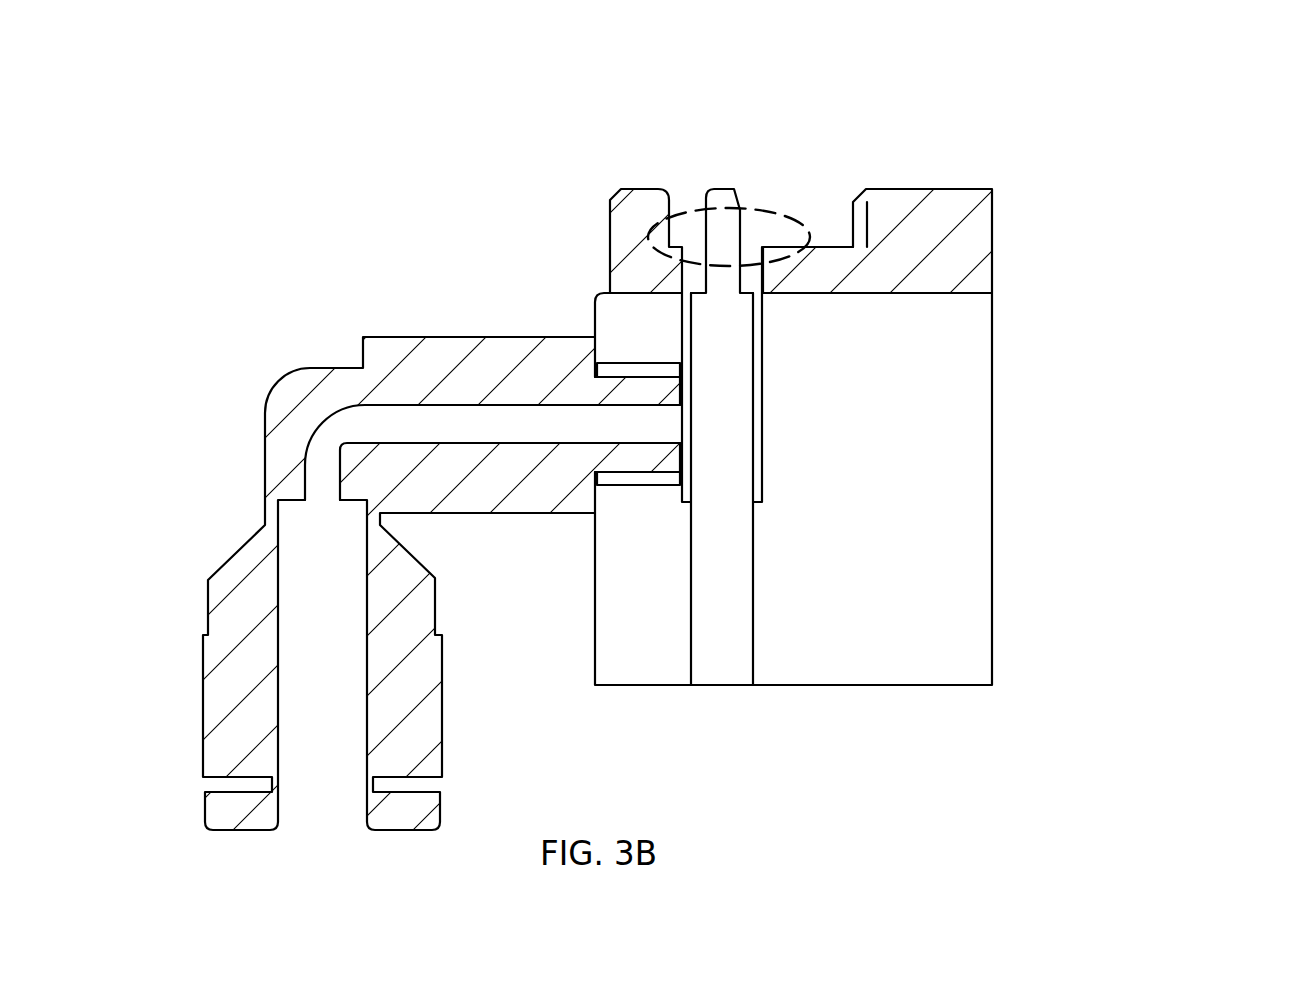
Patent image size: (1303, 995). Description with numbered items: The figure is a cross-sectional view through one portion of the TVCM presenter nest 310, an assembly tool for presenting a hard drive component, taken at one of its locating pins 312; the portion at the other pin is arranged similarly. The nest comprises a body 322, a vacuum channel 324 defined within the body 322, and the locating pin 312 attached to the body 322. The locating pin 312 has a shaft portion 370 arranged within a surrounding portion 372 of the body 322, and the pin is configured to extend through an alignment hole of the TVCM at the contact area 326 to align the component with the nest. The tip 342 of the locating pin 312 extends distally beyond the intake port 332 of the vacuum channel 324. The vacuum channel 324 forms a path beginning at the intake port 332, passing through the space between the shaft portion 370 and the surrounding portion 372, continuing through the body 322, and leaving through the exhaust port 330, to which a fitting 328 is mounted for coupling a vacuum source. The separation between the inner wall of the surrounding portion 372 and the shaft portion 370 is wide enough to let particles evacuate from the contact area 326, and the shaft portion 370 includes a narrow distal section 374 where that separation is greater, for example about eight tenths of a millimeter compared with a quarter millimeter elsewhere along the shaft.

The TVCM presenter nest 310 is at (443, 62).
The locating pin 312 is at (923, 410).
The body 322 is at (780, 409).
The vacuum channel 324 is at (653, 423).
The contact area 326 is at (643, 236).
The fitting 328 is at (391, 562).
The exhaust port 330 is at (598, 377).
The intake port 332 is at (757, 247).
The tip 342 is at (716, 206).
The shaft portion 370 is at (732, 333).
The surrounding portion 372 is at (760, 383).
The narrow distal section 374 is at (728, 269).